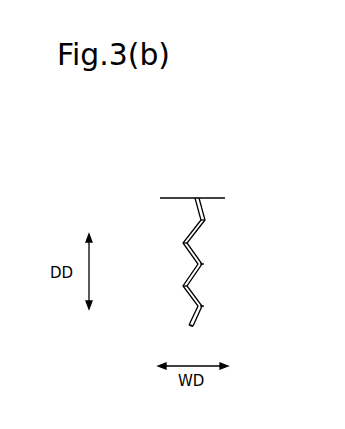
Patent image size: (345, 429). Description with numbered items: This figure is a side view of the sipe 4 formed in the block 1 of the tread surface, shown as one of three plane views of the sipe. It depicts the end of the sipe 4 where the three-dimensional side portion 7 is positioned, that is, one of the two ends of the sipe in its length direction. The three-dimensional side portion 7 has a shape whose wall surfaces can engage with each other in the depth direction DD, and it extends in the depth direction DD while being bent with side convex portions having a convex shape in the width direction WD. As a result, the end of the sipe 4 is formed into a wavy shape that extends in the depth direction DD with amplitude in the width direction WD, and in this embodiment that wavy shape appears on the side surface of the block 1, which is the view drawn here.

The block 1 is at (170, 197).
The sipe 4 is at (193, 197).
The 3D side portion 7 is at (187, 316).